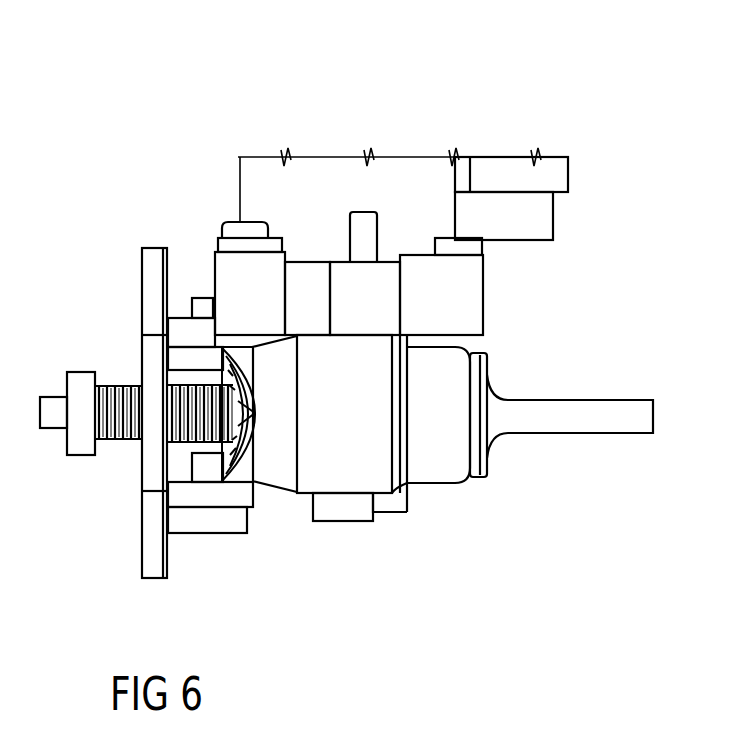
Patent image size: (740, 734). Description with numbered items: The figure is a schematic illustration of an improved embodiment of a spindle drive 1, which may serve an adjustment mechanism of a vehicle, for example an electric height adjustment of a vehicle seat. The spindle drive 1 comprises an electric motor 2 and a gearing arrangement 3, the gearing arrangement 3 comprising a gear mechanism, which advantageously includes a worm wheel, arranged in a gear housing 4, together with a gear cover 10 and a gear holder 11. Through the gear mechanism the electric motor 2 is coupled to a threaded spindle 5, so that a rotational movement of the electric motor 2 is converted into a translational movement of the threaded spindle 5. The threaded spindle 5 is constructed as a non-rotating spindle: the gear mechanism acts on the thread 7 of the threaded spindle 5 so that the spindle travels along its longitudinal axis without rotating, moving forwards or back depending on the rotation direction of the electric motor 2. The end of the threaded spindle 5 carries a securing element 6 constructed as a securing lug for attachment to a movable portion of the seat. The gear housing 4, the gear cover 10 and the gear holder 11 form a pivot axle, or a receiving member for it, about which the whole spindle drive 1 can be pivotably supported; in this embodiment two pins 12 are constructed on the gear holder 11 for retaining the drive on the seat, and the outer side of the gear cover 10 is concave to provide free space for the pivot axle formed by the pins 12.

The spindle drive 1 is at (518, 120).
The electric motor 2 is at (343, 168).
The gearing arrangement 3 is at (342, 612).
The gear housing 4 is at (338, 480).
The threaded spindle 5 is at (118, 440).
The securing element 6 is at (618, 423).
The thread 7 is at (120, 375).
The gear cover 10 is at (260, 487).
The gear holder 11 is at (153, 262).
The pin 12 is at (207, 310).